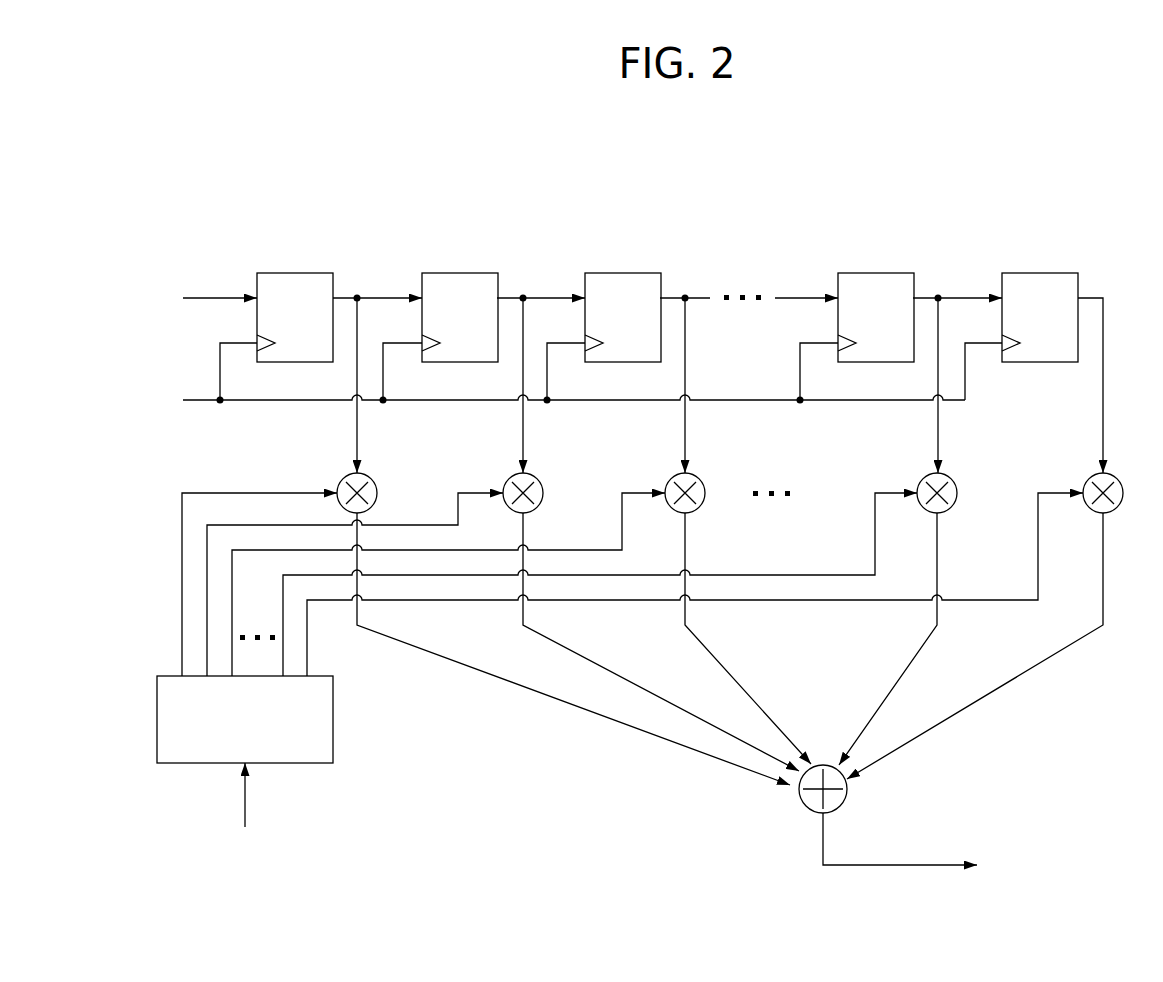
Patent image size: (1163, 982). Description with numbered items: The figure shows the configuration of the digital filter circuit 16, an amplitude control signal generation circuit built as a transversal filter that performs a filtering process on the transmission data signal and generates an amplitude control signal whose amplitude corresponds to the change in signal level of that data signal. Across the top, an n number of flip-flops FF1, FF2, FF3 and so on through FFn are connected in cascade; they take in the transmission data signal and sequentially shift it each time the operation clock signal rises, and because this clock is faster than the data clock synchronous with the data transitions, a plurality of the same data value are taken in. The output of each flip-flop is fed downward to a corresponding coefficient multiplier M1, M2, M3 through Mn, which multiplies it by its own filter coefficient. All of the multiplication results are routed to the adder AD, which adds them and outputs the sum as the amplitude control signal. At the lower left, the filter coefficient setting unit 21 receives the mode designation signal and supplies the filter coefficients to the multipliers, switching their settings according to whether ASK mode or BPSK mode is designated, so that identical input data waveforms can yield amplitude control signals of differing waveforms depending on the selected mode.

The digital filter circuit 16 is at (952, 183).
The filter coefficient setting unit 21 is at (333, 700).
The flip-flop FF1 is at (318, 273).
The flip-flop FF2 is at (482, 273).
The flip-flop FF3 is at (645, 273).
The flip-flop FFn is at (1062, 273).
The coefficient multiplier M1 is at (371, 479).
The coefficient multiplier M2 is at (537, 479).
The coefficient multiplier M3 is at (699, 479).
The coefficient multiplier Mn is at (1117, 479).
The adder AD is at (843, 805).